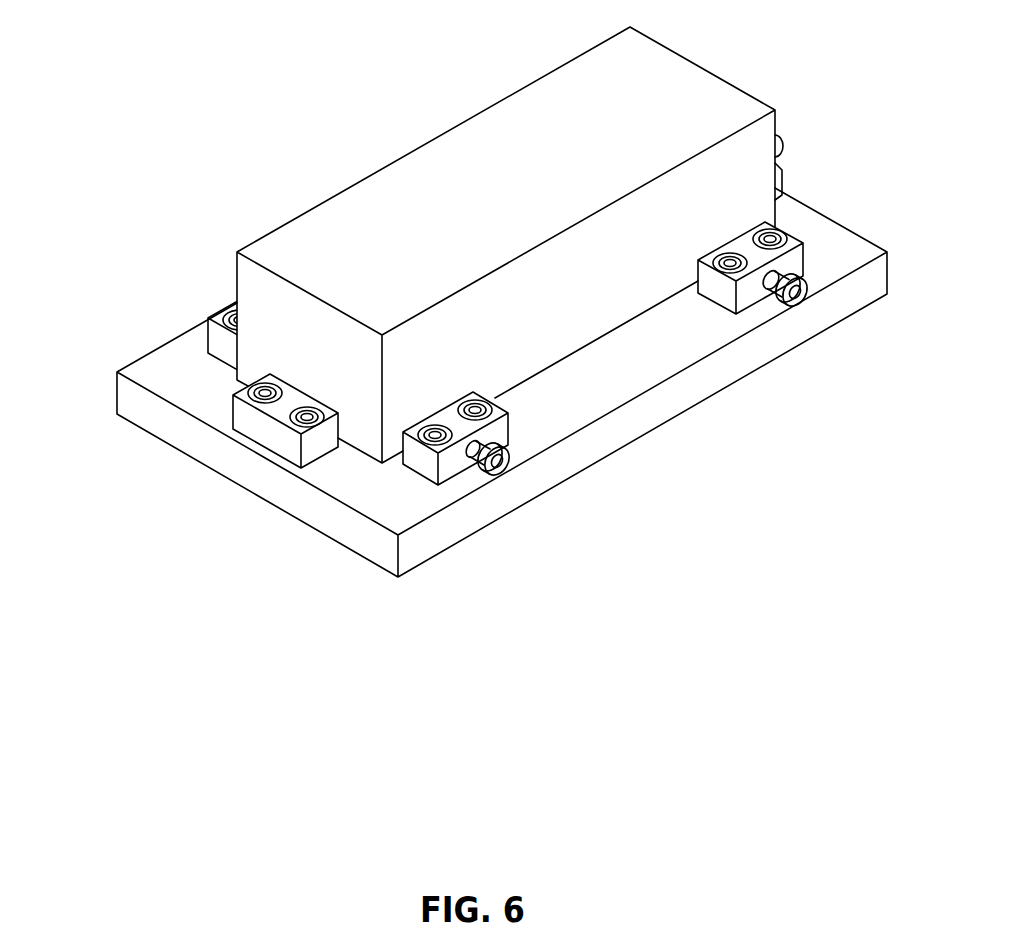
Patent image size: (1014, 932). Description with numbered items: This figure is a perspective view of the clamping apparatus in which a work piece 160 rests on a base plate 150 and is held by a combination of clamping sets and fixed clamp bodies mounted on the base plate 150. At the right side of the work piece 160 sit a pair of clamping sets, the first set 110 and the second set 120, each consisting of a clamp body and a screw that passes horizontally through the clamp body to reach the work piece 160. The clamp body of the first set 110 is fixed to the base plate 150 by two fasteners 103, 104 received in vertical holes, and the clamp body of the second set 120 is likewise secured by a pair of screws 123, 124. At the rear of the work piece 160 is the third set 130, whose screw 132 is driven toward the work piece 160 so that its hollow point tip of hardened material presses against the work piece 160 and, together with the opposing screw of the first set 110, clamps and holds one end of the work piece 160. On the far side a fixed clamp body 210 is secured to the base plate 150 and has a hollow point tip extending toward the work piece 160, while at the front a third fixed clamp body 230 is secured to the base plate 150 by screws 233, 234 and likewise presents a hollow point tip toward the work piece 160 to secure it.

The base plate 150 is at (443, 538).
The work piece 160 is at (562, 332).
The first set 110 is at (541, 414).
The fastener 103 is at (430, 433).
The fastener 104 is at (478, 402).
The second set 120 is at (743, 235).
The screw 123 is at (712, 262).
The screw 124 is at (752, 234).
The third set 130 is at (780, 167).
The screw 132 is at (778, 143).
The fixed clamp body 210 is at (218, 340).
The fixed clamp body 230 is at (187, 488).
The screw 233 is at (238, 398).
The screw 234 is at (302, 425).